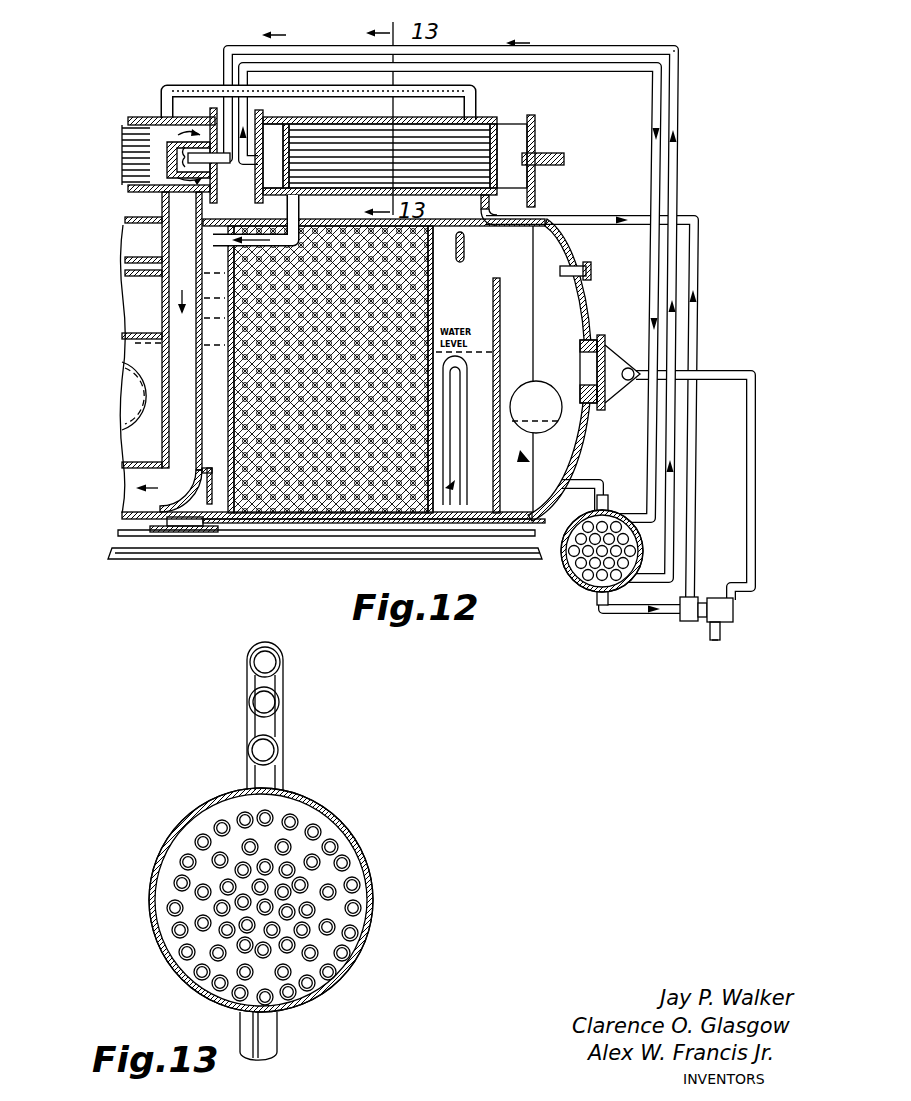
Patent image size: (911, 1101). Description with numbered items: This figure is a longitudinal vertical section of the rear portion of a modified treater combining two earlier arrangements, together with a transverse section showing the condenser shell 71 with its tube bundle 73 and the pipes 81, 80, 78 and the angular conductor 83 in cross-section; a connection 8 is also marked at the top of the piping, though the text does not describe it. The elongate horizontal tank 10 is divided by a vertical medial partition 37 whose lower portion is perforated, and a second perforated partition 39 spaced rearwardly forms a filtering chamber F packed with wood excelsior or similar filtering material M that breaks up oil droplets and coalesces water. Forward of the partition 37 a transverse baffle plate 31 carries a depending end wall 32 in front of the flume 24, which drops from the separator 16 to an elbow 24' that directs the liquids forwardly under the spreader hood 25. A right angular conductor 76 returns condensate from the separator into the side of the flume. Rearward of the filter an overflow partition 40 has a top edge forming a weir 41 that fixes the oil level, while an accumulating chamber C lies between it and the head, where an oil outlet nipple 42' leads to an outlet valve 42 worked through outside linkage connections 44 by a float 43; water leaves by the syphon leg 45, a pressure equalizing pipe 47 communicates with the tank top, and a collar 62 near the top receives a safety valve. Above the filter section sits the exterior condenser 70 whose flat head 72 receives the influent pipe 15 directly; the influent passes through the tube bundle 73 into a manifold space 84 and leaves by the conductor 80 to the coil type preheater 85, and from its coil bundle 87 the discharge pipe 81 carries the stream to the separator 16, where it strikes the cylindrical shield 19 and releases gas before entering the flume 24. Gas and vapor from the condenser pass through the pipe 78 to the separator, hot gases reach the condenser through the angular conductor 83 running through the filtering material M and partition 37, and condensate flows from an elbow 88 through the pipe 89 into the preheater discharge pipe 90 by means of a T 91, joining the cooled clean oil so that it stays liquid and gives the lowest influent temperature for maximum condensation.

In FIG. 12, the hot water supply pipe 8 is at (578, 50).
In FIG. 12, the tank 10 is at (252, 521).
In FIG. 12, the inlet pipe 15 is at (565, 155).
In FIG. 12, the gas separator 16 is at (152, 117).
In FIG. 12, the cylindrical shield 19 is at (190, 148).
In FIG. 12, the flume 24 is at (138, 352).
In FIG. 12, the elbow 24' is at (119, 510).
In FIG. 12, the spreader hood 25 is at (132, 455).
In FIG. 12, the baffle plate 31 is at (123, 332).
In FIG. 12, the end wall 32 is at (124, 372).
In FIG. 12, the medial partition 37 is at (172, 297).
In FIG. 12, the perforated partition 39 is at (434, 315).
In FIG. 12, the overflow partition 40 is at (500, 343).
In FIG. 12, the weir 41 is at (500, 277).
In FIG. 12, the outlet valve 42 is at (741, 639).
In FIG. 12, the oil outlet nipple 42' is at (597, 465).
In FIG. 12, the float 43 is at (522, 382).
In FIG. 12, the linkage connections 44 is at (753, 455).
In FIG. 12, the water discharge pipe 45 is at (455, 446).
In FIG. 12, the pressure equalizing pipe 47 is at (466, 246).
In FIG. 12, the collar 62 is at (585, 270).
In FIG. 12, the condenser 70 is at (272, 119).
In FIG. 12, the shell 71 is at (378, 119).
In FIG. 13, the shell 71 is at (330, 815).
In FIG. 12, the head 72 is at (537, 140).
In FIG. 12, the tube bundle 73 is at (398, 126).
In FIG. 13, the tube bundle 73 is at (178, 853).
In FIG. 12, the right angular conductor 76 is at (153, 255).
In FIG. 12, the pipe 78 is at (167, 86).
In FIG. 13, the pipe 78 is at (284, 752).
In FIG. 12, the conductor 80 is at (238, 72).
In FIG. 13, the conductor 80 is at (284, 706).
In FIG. 12, the discharge pipe 81 is at (706, 486).
In FIG. 13, the discharge pipe 81 is at (283, 661).
In FIG. 12, the angular conductor 83 is at (303, 212).
In FIG. 13, the angular conductor 83 is at (280, 1025).
In FIG. 12, the manifold space 84 is at (266, 152).
In FIG. 12, the coil type preheater 85 is at (588, 588).
In FIG. 12, the coil bundle 87 is at (588, 548).
In FIG. 12, the elbow 88 is at (490, 202).
In FIG. 12, the pipe 89 is at (535, 218).
In FIG. 12, the discharge pipe 90 is at (632, 612).
In FIG. 12, the T 91 is at (688, 620).
In FIG. 12, the accumulating chamber C is at (598, 308).
In FIG. 12, the filtering chamber F is at (280, 520).
In FIG. 12, the filtering material M is at (496, 282).